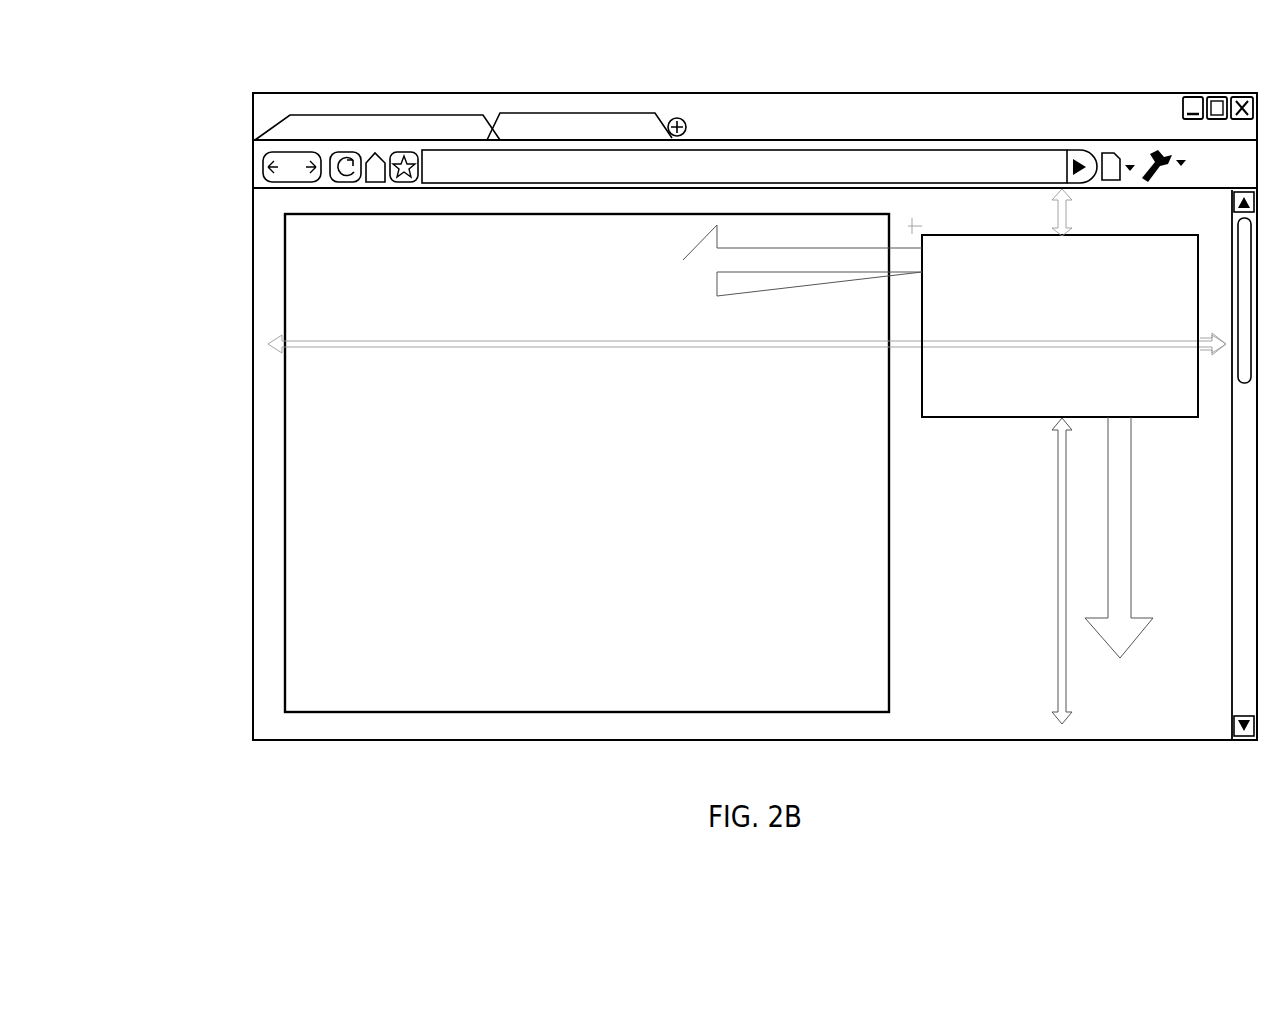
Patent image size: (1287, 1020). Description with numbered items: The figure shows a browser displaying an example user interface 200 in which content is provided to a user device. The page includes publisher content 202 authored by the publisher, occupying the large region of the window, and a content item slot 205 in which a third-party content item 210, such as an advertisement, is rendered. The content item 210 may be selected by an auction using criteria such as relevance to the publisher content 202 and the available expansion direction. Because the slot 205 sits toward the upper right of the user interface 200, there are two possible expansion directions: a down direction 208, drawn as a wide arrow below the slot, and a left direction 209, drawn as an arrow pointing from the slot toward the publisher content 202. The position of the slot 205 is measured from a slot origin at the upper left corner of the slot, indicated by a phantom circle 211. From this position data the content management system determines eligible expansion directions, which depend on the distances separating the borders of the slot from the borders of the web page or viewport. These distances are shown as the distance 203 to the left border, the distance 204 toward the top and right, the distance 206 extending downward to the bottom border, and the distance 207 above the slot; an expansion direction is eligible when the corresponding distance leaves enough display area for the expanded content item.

The user interface 200 is at (232, 95).
The publisher content 202 is at (587, 463).
The distance 203 is at (905, 345).
The distance 204 is at (1215, 352).
The content item slot 205 is at (996, 420).
The distance 206 is at (1058, 600).
The distance 207 is at (1058, 212).
The down expansion direction 208 is at (1131, 587).
The left expansion direction 209 is at (752, 273).
The content item 210 is at (1062, 331).
The phantom circle 211 is at (926, 227).